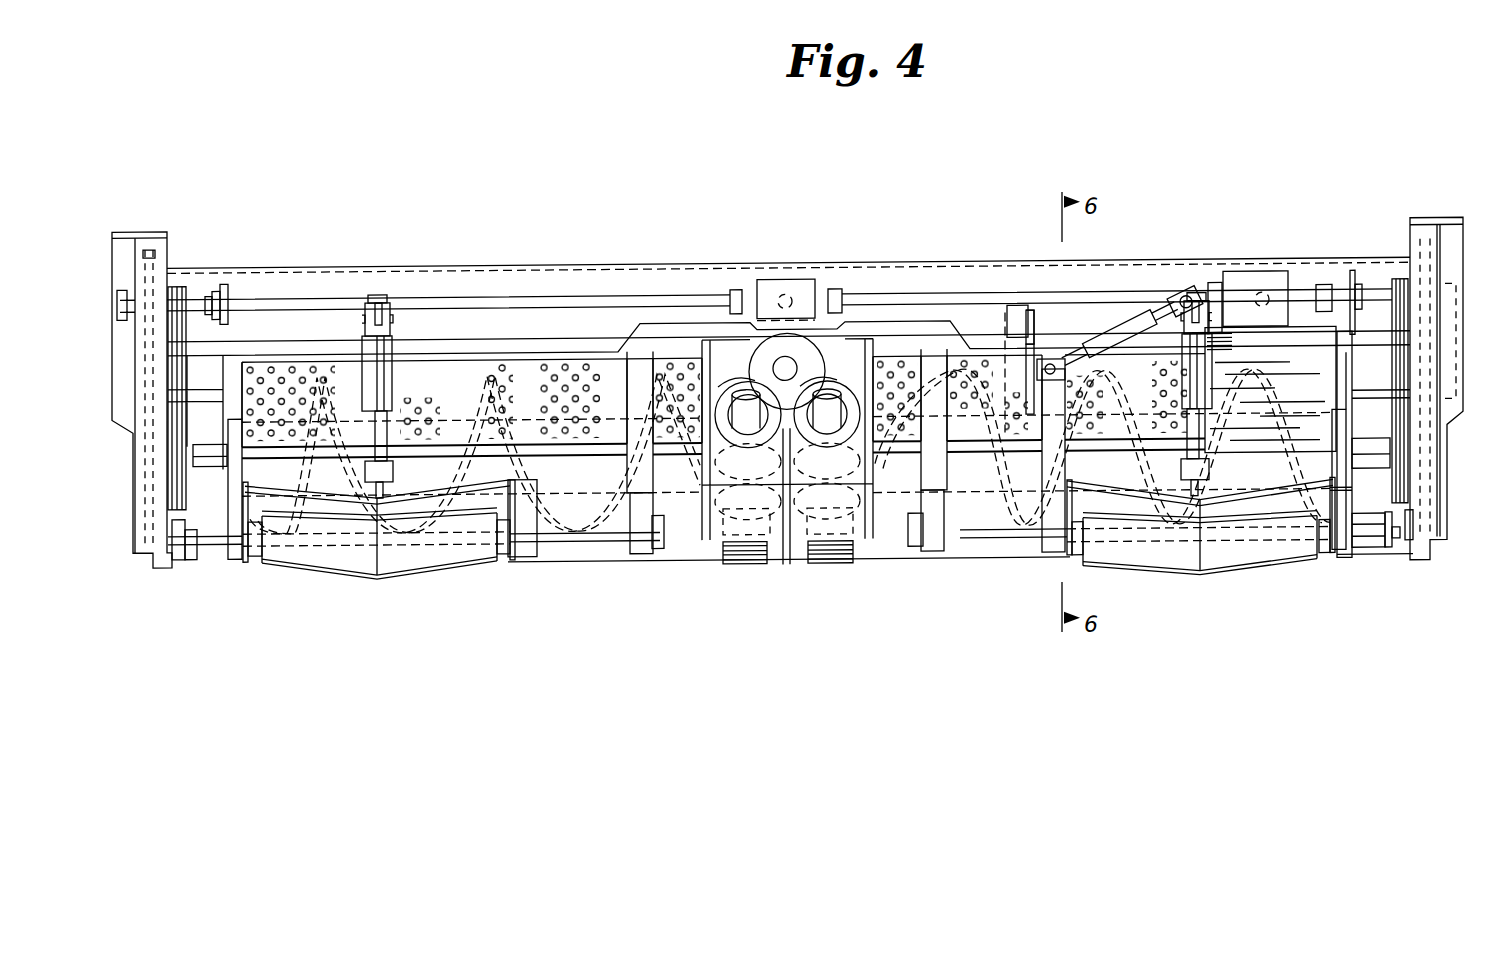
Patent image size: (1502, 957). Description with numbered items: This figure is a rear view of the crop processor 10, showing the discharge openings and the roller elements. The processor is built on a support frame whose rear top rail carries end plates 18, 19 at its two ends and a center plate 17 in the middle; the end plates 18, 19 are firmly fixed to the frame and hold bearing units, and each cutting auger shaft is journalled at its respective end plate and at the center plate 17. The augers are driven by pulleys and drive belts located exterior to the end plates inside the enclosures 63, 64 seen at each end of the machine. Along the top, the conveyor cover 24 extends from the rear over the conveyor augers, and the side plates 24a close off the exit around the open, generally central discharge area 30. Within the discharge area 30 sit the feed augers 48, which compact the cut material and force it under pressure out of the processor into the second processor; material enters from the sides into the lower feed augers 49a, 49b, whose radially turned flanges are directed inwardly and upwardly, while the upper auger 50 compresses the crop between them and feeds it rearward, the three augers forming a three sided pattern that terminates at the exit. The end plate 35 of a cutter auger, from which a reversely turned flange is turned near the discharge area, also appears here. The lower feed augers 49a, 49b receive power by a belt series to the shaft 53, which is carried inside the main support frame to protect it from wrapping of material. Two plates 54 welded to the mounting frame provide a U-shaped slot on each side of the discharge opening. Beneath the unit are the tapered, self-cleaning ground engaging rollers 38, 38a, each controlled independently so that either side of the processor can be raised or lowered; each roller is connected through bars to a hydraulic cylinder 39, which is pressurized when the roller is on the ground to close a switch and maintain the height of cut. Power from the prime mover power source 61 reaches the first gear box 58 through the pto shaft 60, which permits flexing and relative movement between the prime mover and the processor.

The crop processor 10 is at (1343, 170).
The center plate 17 is at (790, 558).
The end plate 18 is at (222, 290).
The end plate 19 is at (1350, 284).
The conveyor cover 24 is at (572, 404).
The side plates 24a is at (718, 365).
The central discharge area 30 is at (733, 352).
The end plate 35 is at (792, 555).
The ground engaging roller 38 is at (405, 580).
The ground engaging roller 38a is at (1256, 572).
The hydraulic cylinder 39 is at (396, 353).
The feed augers 48 is at (847, 352).
The lower feed auger 49a is at (686, 540).
The lower feed auger 49b is at (908, 500).
The upper auger 50 is at (806, 355).
The shaft 53 is at (1005, 550).
The plates 54 is at (614, 405).
The first gear box 58 is at (1254, 286).
The pto shaft 60 is at (1112, 340).
The power source 61 is at (1035, 322).
The enclosure 63 is at (125, 455).
The enclosure 64 is at (1478, 245).